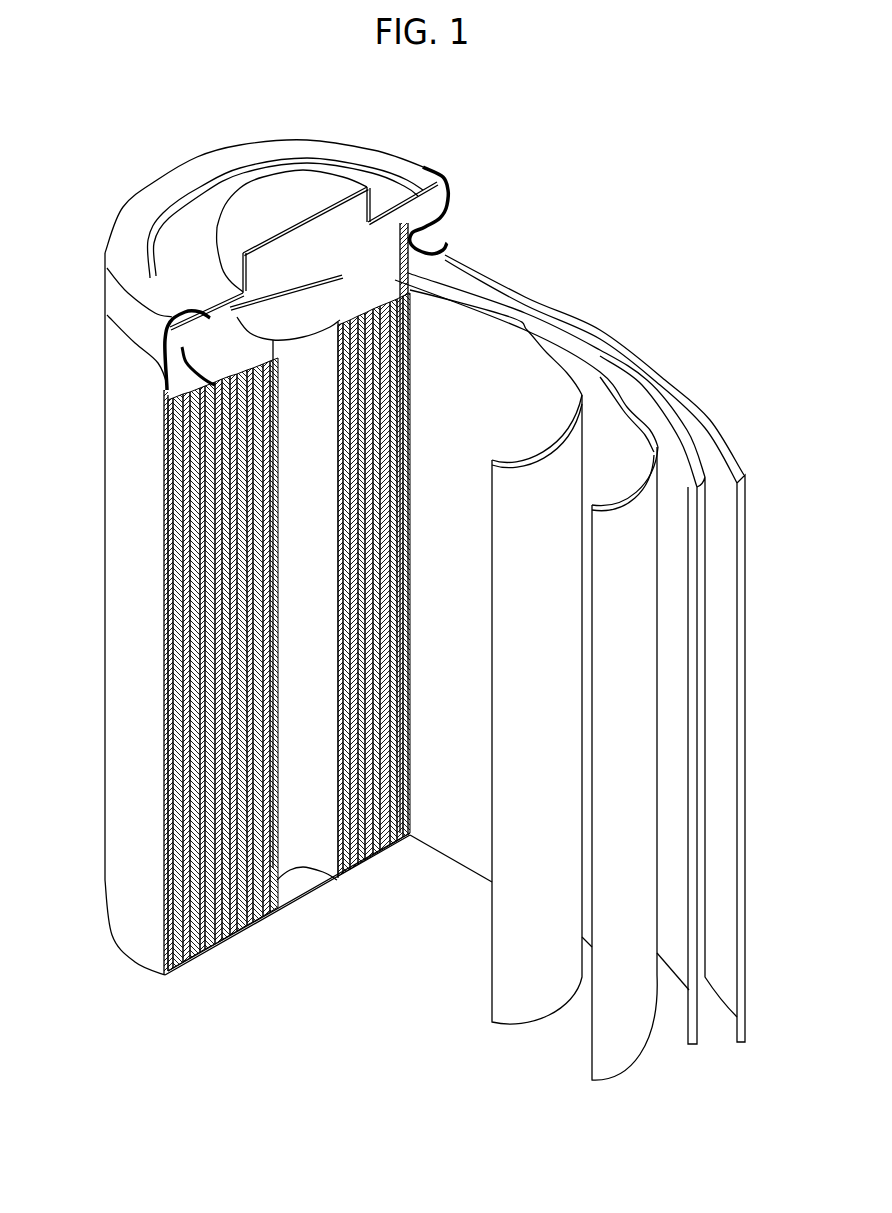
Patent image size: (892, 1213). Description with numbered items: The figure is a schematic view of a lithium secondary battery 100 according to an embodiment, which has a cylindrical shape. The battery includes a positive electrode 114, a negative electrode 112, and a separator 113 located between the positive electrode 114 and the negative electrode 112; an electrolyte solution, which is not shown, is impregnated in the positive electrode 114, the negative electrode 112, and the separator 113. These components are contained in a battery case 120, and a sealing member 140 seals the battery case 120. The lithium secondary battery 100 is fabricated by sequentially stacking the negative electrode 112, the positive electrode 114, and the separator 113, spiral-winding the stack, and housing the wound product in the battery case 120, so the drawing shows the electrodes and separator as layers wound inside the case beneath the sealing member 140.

The lithium secondary battery 100 is at (465, 159).
The negative electrode 112 is at (718, 438).
The separator 113 is at (533, 383).
The positive electrode 114 is at (592, 383).
The battery case 120 is at (138, 933).
The sealing member 140 is at (252, 203).